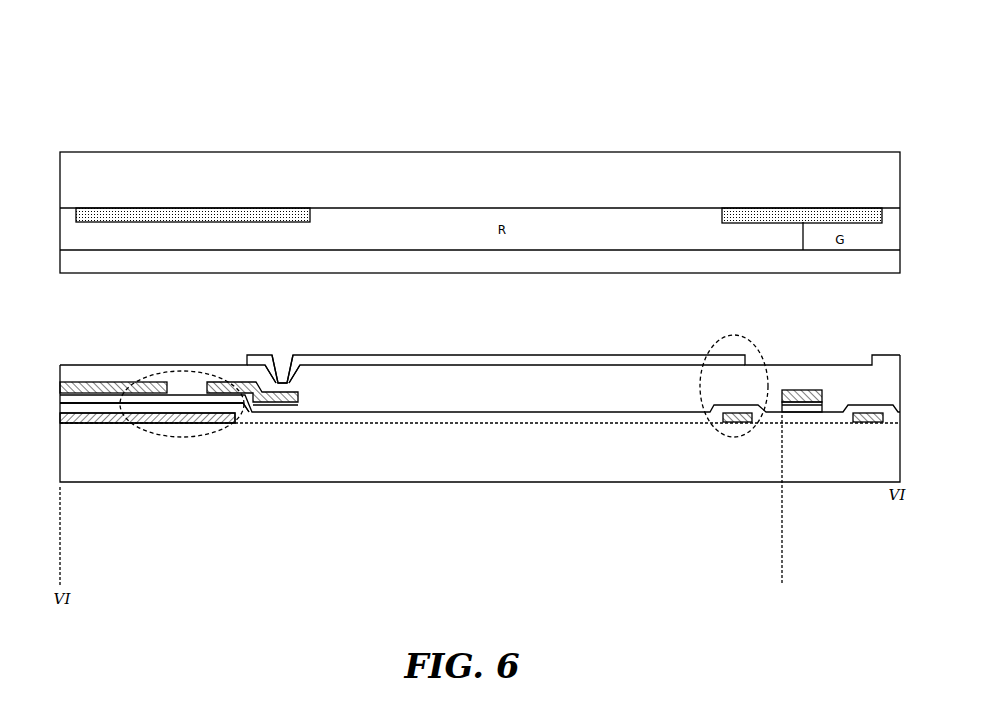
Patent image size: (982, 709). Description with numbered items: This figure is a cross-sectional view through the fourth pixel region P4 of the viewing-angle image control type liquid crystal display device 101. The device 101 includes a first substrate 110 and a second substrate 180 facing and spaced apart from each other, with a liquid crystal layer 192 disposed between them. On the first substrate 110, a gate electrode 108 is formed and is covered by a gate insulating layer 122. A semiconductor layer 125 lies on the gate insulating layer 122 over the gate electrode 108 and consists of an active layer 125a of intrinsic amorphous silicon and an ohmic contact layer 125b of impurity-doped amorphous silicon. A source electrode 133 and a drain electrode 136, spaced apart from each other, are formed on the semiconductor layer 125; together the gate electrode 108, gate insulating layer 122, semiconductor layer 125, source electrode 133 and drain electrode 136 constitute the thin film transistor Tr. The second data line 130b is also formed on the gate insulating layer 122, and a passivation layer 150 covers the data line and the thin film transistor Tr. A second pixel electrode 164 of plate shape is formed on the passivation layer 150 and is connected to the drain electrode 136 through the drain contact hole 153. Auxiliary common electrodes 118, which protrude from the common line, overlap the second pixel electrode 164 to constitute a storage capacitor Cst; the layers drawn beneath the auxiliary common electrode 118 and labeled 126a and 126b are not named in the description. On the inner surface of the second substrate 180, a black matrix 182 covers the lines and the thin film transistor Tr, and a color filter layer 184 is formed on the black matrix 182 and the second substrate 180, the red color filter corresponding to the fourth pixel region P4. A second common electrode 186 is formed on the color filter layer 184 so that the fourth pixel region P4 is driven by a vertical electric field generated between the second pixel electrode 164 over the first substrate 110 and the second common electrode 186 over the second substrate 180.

The viewing-angle image control type liquid crystal display device 101 is at (842, 116).
The gate electrode 108 is at (182, 425).
The first substrate 110 is at (862, 457).
The auxiliary common electrode 118 is at (865, 412).
The gate insulating layer 122 is at (606, 413).
The semiconductor layer 125 is at (282, 513).
The active layer 125a is at (232, 418).
The ohmic contact layer 125b is at (248, 410).
The first capacitor electrode layer 126a is at (800, 411).
The second capacitor electrode layer 126b is at (815, 408).
The second data line 130b is at (723, 420).
The source electrode 133 is at (160, 382).
The drain electrode 136 is at (222, 382).
The passivation layer 150 is at (393, 382).
The drain contact hole 153 is at (280, 353).
The second pixel electrode 164 is at (472, 355).
The second substrate 180 is at (876, 185).
The black matrix 182 is at (248, 208).
The color filter layer 184 is at (360, 229).
The second common electrode 186 is at (463, 263).
The liquid crystal layer 192 is at (92, 300).
The thin film transistor Tr is at (143, 427).
The storage capacitor Cst is at (767, 350).
The fourth pixel region P4 is at (61, 578).